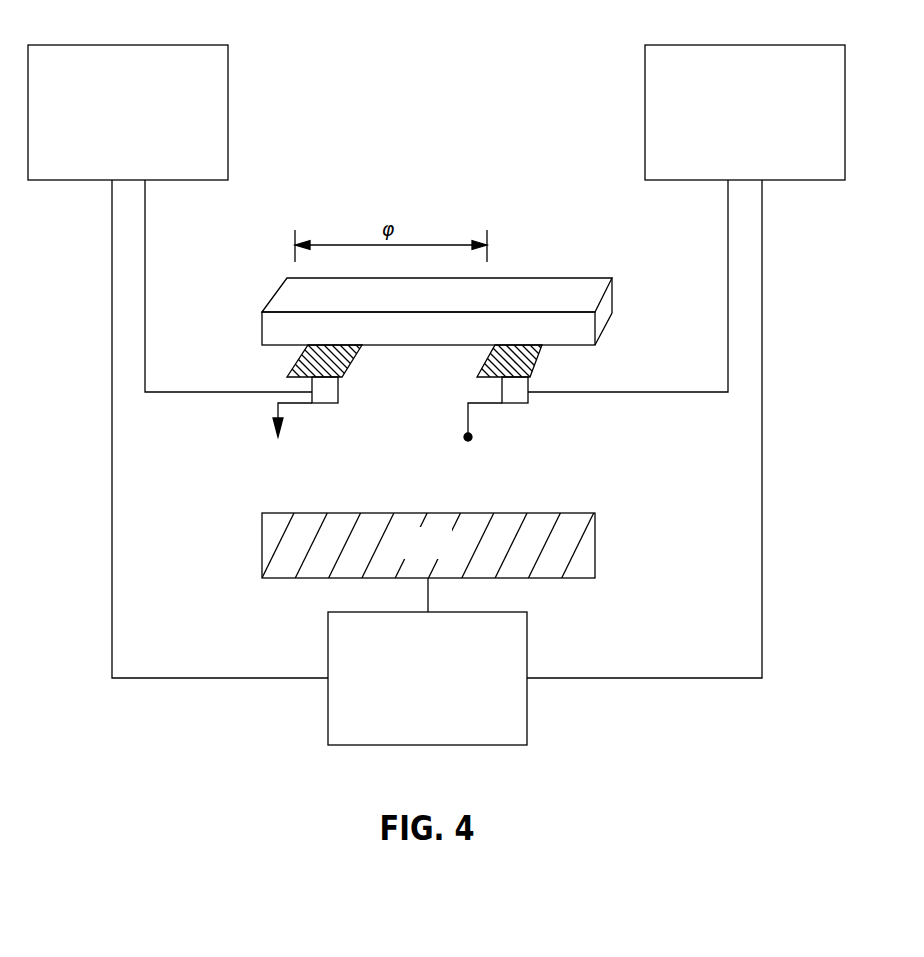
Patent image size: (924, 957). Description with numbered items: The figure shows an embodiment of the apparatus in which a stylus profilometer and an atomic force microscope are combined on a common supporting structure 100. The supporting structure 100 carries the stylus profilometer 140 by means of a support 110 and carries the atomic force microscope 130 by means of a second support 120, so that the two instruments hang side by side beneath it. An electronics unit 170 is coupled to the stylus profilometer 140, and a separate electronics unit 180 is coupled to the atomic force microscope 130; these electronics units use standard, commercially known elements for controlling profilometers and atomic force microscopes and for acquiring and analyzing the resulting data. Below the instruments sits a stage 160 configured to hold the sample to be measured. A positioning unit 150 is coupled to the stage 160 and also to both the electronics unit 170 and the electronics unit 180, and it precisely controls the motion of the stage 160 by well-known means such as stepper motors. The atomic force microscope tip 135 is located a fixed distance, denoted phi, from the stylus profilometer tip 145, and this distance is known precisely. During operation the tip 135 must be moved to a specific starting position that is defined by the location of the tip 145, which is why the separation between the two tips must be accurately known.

The supporting structure 100 is at (410, 338).
The support 110 is at (530, 363).
The support 120 is at (340, 363).
The atomic force microscope 130 is at (328, 393).
The atomic force microscope tip 135 is at (299, 433).
The stylus profilometer 140 is at (518, 393).
The stylus profilometer tip 145 is at (491, 433).
The positioning unit 150 is at (410, 702).
The stage 160 is at (410, 554).
The electronics unit 170 is at (727, 138).
The electronics unit 180 is at (110, 138).